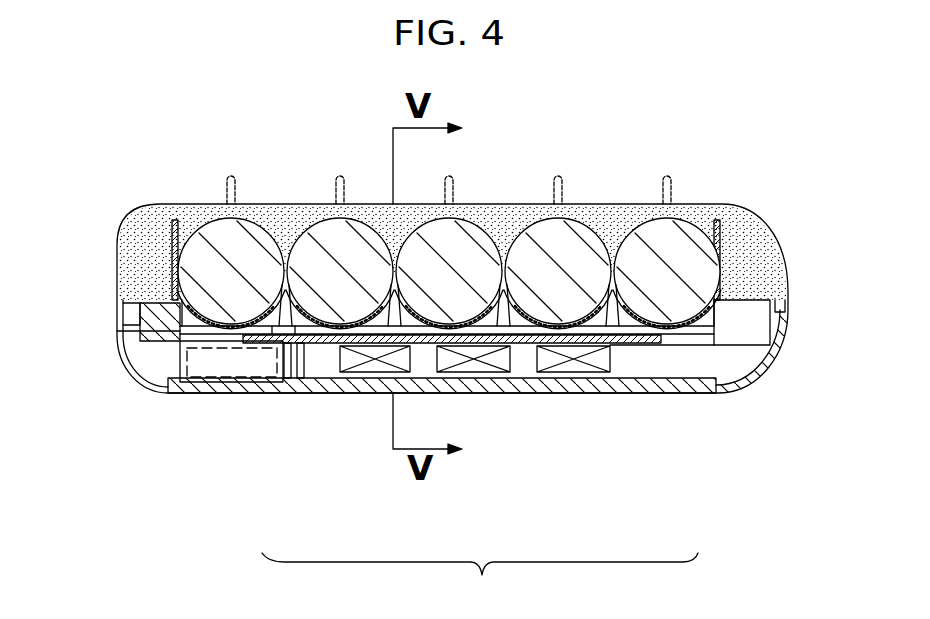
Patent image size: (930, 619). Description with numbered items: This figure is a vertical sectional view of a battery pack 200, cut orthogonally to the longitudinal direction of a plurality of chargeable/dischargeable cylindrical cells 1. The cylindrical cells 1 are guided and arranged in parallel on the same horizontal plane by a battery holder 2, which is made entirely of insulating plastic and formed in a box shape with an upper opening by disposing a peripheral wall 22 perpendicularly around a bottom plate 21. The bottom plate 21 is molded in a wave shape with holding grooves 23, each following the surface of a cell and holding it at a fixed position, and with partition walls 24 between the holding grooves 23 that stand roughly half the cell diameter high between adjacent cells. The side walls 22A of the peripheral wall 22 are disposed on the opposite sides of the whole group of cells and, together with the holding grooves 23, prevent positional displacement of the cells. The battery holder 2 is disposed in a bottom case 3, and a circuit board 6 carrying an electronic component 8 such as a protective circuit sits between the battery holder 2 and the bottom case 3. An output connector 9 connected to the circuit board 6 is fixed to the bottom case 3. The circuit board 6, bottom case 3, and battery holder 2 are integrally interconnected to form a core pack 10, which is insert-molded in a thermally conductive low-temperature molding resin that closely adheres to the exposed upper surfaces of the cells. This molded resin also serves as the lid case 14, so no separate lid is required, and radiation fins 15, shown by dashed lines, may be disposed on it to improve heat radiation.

The cylindrical cell 1 is at (213, 245).
The battery holder 2 is at (678, 340).
The bottom case 3 is at (532, 380).
The circuit board 6 is at (250, 372).
The electronic component 8 is at (470, 366).
The output connector 9 is at (212, 365).
The core pack 10 is at (480, 585).
The lid case 14 is at (497, 230).
The radiation fins 15 is at (231, 172).
The bottom plate 21 is at (316, 343).
The peripheral wall 22 is at (421, 231).
The side wall 22A is at (150, 240).
The holding groove 23 is at (348, 318).
The partition wall 24 is at (304, 300).
The battery pack 200 is at (747, 120).